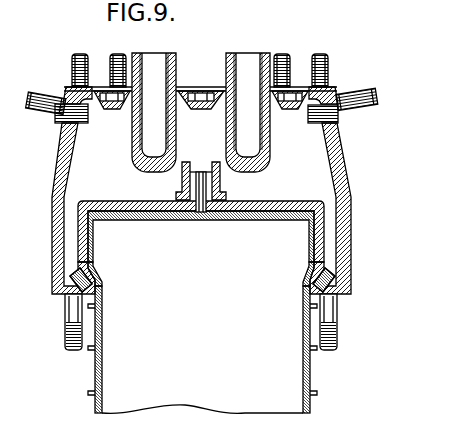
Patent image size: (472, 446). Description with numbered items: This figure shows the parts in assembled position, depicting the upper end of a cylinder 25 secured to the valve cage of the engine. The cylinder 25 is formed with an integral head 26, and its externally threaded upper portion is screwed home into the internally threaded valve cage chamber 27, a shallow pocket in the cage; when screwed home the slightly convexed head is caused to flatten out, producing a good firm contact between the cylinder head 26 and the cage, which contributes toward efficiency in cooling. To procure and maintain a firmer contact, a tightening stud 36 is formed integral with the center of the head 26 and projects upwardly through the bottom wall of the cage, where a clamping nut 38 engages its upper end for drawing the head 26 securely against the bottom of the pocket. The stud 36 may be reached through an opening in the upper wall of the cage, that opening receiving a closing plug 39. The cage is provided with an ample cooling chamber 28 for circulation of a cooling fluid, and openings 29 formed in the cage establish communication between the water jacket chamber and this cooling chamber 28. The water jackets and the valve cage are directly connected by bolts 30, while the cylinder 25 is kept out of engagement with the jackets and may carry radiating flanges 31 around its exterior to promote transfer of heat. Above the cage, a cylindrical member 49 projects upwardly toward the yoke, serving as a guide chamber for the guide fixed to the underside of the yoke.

The cylinder 25 is at (102, 371).
The cylinder head 26 is at (243, 221).
The valve cage chamber 27 is at (293, 152).
The cooling chamber 28 is at (334, 238).
The opening 29 is at (337, 278).
The bolt 30 is at (68, 328).
The radiating flange 31 is at (88, 394).
The tightening stud 36 is at (219, 182).
The clamping nut 38 is at (138, 186).
The closing plug 39 is at (185, 89).
The cylindrical member 49 is at (135, 54).